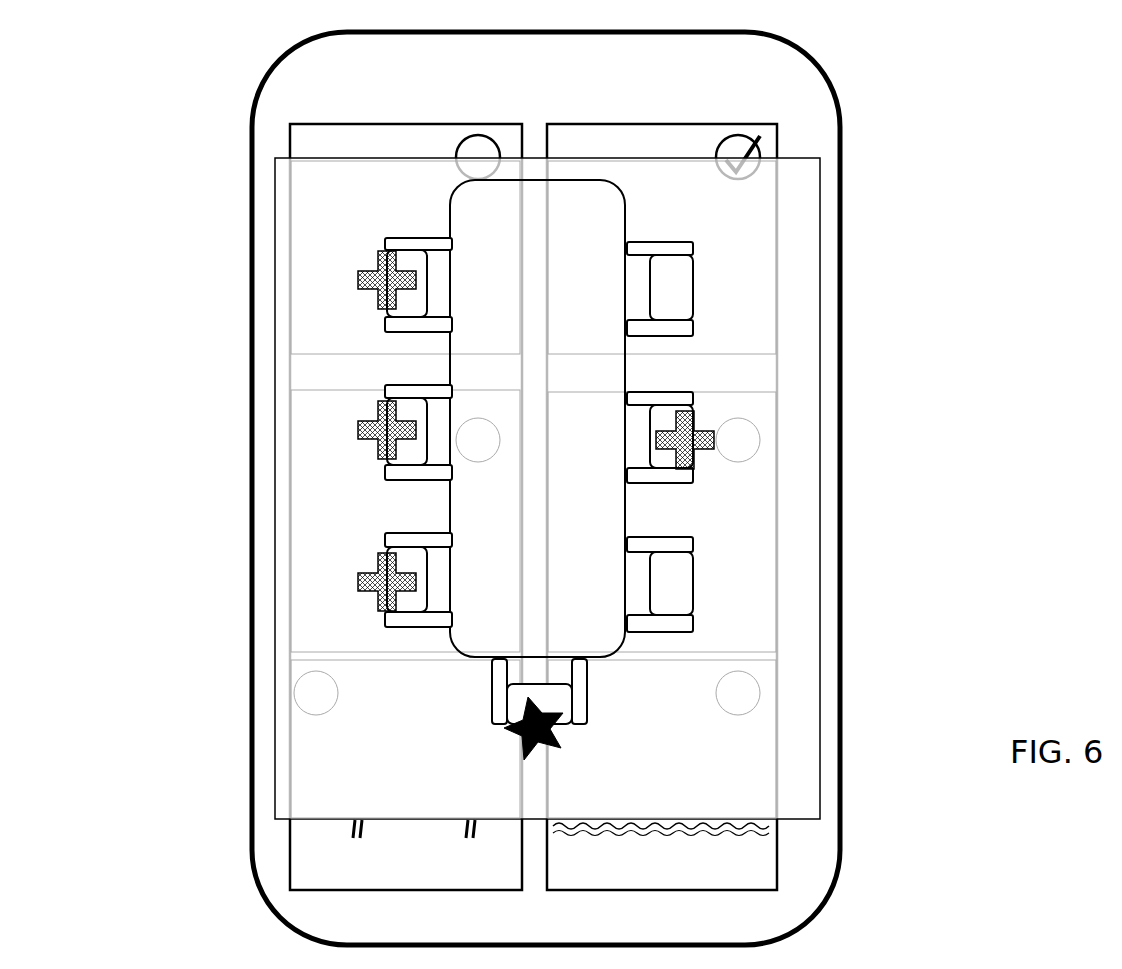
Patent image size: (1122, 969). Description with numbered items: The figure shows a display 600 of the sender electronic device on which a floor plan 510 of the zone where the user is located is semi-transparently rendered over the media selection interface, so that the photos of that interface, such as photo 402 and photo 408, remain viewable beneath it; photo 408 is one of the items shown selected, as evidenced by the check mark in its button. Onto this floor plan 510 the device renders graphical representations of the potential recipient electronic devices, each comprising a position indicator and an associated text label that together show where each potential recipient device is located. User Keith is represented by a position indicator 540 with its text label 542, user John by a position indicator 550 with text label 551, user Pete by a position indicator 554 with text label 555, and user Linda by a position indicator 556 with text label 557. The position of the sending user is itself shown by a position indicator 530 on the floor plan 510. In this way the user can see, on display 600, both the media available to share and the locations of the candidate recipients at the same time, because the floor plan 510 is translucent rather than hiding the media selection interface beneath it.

The display 600 is at (884, 134).
The photo 402 is at (413, 140).
The photo 408 is at (666, 140).
The floor plan 510 is at (797, 242).
The position indicator 550 is at (383, 305).
The text label 551 is at (319, 270).
The position indicator 554 is at (381, 455).
The text label 555 is at (318, 420).
The position indicator 556 is at (375, 587).
The text label 557 is at (313, 567).
The position indicator 540 is at (690, 458).
The text label 542 is at (773, 455).
The position indicator 530 is at (540, 747).